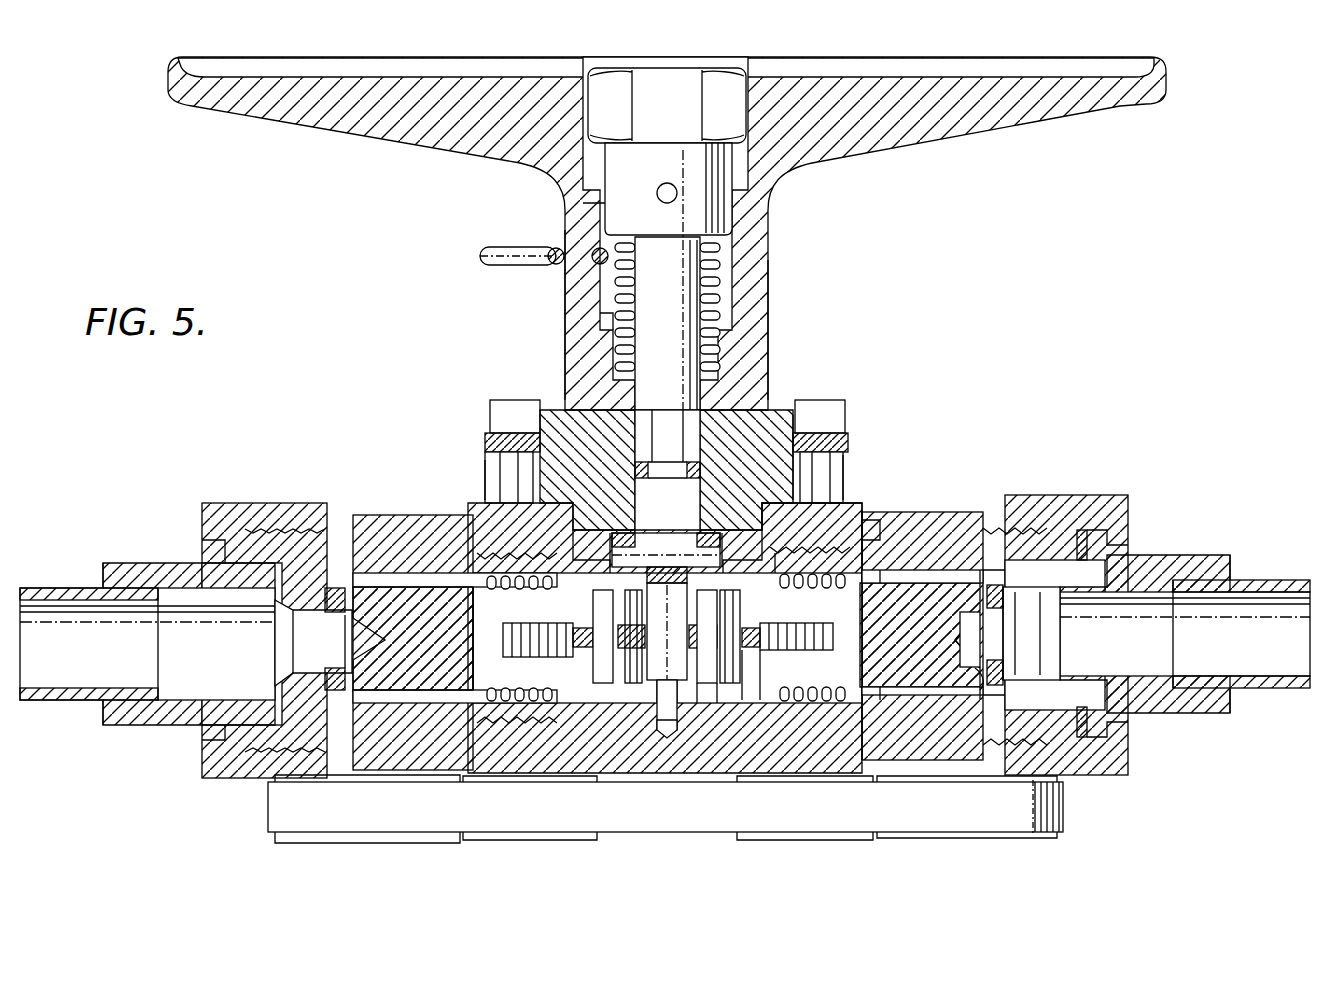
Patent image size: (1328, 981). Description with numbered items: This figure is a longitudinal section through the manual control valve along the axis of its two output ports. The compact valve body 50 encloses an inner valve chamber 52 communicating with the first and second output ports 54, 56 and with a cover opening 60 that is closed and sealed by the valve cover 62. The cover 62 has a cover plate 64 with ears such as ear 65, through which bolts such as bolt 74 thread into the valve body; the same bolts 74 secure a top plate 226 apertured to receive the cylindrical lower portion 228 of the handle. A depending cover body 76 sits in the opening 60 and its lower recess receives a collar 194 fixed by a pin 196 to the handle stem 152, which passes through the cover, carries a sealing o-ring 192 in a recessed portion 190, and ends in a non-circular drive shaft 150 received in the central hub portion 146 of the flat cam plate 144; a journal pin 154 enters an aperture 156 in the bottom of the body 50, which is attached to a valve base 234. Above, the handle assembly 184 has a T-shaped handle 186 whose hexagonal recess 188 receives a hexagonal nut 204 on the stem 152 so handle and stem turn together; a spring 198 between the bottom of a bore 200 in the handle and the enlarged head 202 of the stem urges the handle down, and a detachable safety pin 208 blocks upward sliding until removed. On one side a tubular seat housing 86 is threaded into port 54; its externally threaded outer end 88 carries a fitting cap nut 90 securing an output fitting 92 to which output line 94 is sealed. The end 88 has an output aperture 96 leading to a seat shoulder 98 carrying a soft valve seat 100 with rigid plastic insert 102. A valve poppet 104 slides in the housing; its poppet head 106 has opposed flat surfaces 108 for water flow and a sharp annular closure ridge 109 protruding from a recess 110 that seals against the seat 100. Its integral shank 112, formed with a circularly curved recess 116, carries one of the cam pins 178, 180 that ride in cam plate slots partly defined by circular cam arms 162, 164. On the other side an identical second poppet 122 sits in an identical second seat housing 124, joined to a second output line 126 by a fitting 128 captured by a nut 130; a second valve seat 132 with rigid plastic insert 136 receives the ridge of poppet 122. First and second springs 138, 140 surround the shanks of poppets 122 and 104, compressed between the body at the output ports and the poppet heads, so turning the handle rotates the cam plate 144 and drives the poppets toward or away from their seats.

The valve body 50 is at (864, 512).
The inner valve chamber 52 is at (604, 580).
The first output port 54 is at (866, 530).
The second output port 56 is at (482, 510).
The cover opening 60 is at (760, 530).
The valve cover 62 is at (762, 410).
The cover plate 64 is at (614, 420).
The cover plate ear 65 is at (484, 470).
The bolt 74 is at (516, 400).
The cover body 76 is at (780, 556).
The valve seat housing 86 is at (932, 516).
The externally threaded outer end 88 is at (1040, 520).
The fitting cap nut 90 is at (1084, 506).
The output fitting 92 is at (1195, 556).
The output line 94 is at (1262, 580).
The output aperture 96 is at (1030, 630).
The seat shoulder 98 is at (1008, 592).
The valve seat 100 is at (998, 566).
The rigid plastic insert 102 is at (968, 652).
The valve poppet 104 is at (898, 582).
The poppet head 106 is at (916, 702).
The flat surfaces 108 is at (992, 590).
The annular closure ridge 109 is at (986, 690).
The recess 110 is at (962, 626).
The poppet shank 112 is at (758, 695).
The circularly curved recess 116 is at (706, 688).
The second poppet 122 is at (412, 586).
The second seat housing 124 is at (398, 518).
The second output line 126 is at (62, 588).
The fitting 128 is at (142, 564).
The nut 130 is at (250, 505).
The second valve seat 132 is at (330, 588).
The rigid plastic insert 136 is at (340, 648).
The first spring 138 is at (518, 592).
The second spring 140 is at (884, 586).
The cam plate 144 is at (800, 590).
The central hub portion 146 is at (660, 640).
The non-circular drive shaft 150 is at (652, 684).
The handle stem 152 is at (705, 440).
The journal pin 154 is at (655, 700).
The aperture 156 is at (678, 732).
The cam arm 162 is at (570, 650).
The cam arm 164 is at (758, 652).
The cam pin 178 is at (593, 608).
The cam pin 180 is at (722, 612).
The handle assembly 184 is at (552, 304).
The T-shaped handle 186 is at (940, 130).
The non-circular recess 188 is at (744, 60).
The recessed portion 190 is at (666, 464).
The sealing o-ring 192 is at (700, 470).
The collar 194 is at (622, 545).
The pin 196 is at (696, 552).
The spring 198 is at (722, 272).
The bore 200 is at (600, 323).
The enlarged head 202 is at (605, 205).
The hexagonal nut 204 is at (672, 68).
The safety pin 208 is at (500, 250).
The top plate 226 is at (846, 455).
The cylindrical lower portion 228 is at (770, 300).
The valve base 234 is at (420, 830).